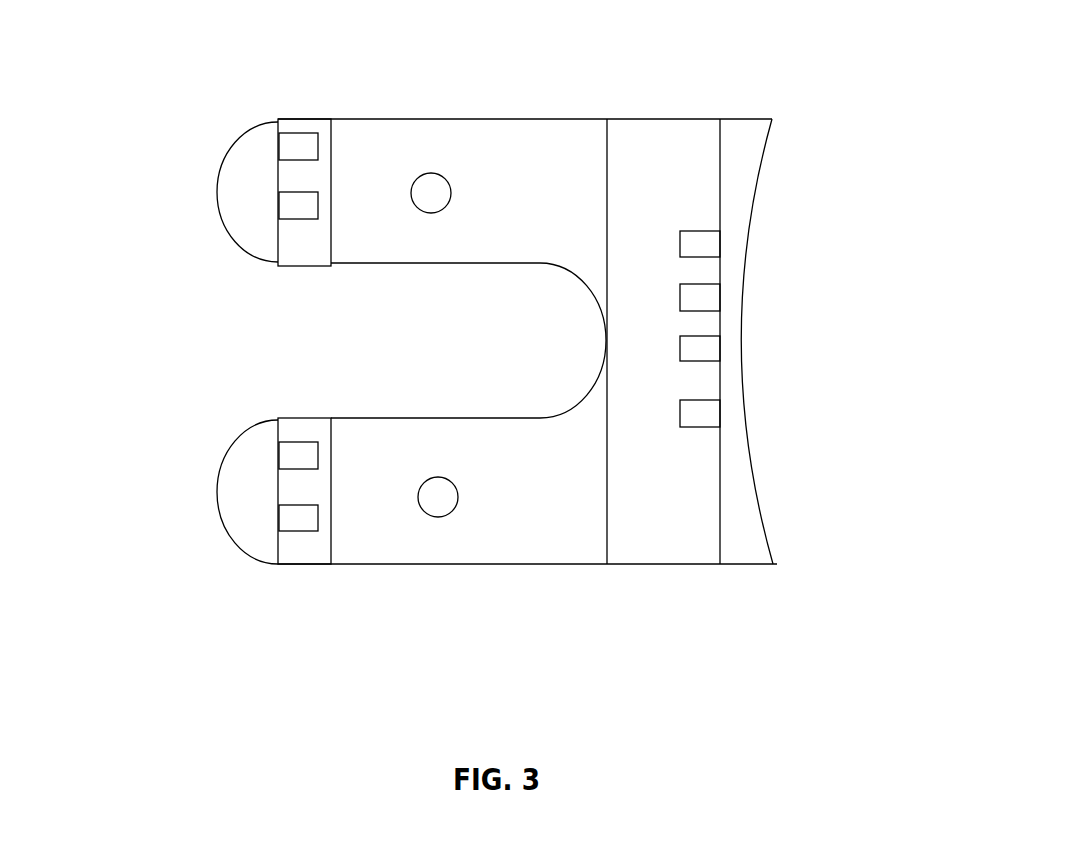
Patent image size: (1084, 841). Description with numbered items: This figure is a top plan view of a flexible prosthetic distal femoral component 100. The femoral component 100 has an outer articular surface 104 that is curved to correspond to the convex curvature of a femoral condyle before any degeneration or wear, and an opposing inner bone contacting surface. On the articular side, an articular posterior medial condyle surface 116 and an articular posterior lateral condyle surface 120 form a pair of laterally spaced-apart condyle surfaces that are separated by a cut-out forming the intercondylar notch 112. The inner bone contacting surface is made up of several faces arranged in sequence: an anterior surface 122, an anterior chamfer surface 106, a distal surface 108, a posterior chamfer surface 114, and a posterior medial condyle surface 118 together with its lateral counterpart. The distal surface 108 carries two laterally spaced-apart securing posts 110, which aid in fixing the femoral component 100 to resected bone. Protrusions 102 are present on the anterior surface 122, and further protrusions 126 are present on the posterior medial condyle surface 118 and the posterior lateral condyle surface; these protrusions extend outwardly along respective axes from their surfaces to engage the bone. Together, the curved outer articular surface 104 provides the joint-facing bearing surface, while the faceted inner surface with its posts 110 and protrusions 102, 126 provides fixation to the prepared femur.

The distal femoral component 100 is at (770, 98).
The protrusions 102 is at (708, 313).
The outer articular surface 104 is at (753, 170).
The anterior chamfer surface 106 is at (663, 553).
The distal surface 108 is at (485, 165).
The securing posts 110 is at (437, 517).
The intercondylar notch 112 is at (297, 335).
The posterior chamfer surface 114 is at (315, 242).
The articular posterior medial condyle surface 116 is at (222, 177).
The posterior medial condyle surface 118 is at (280, 172).
The articular posterior lateral condyle surface 120 is at (220, 490).
The anterior surface 122 is at (720, 167).
The protrusions 126 is at (280, 458).